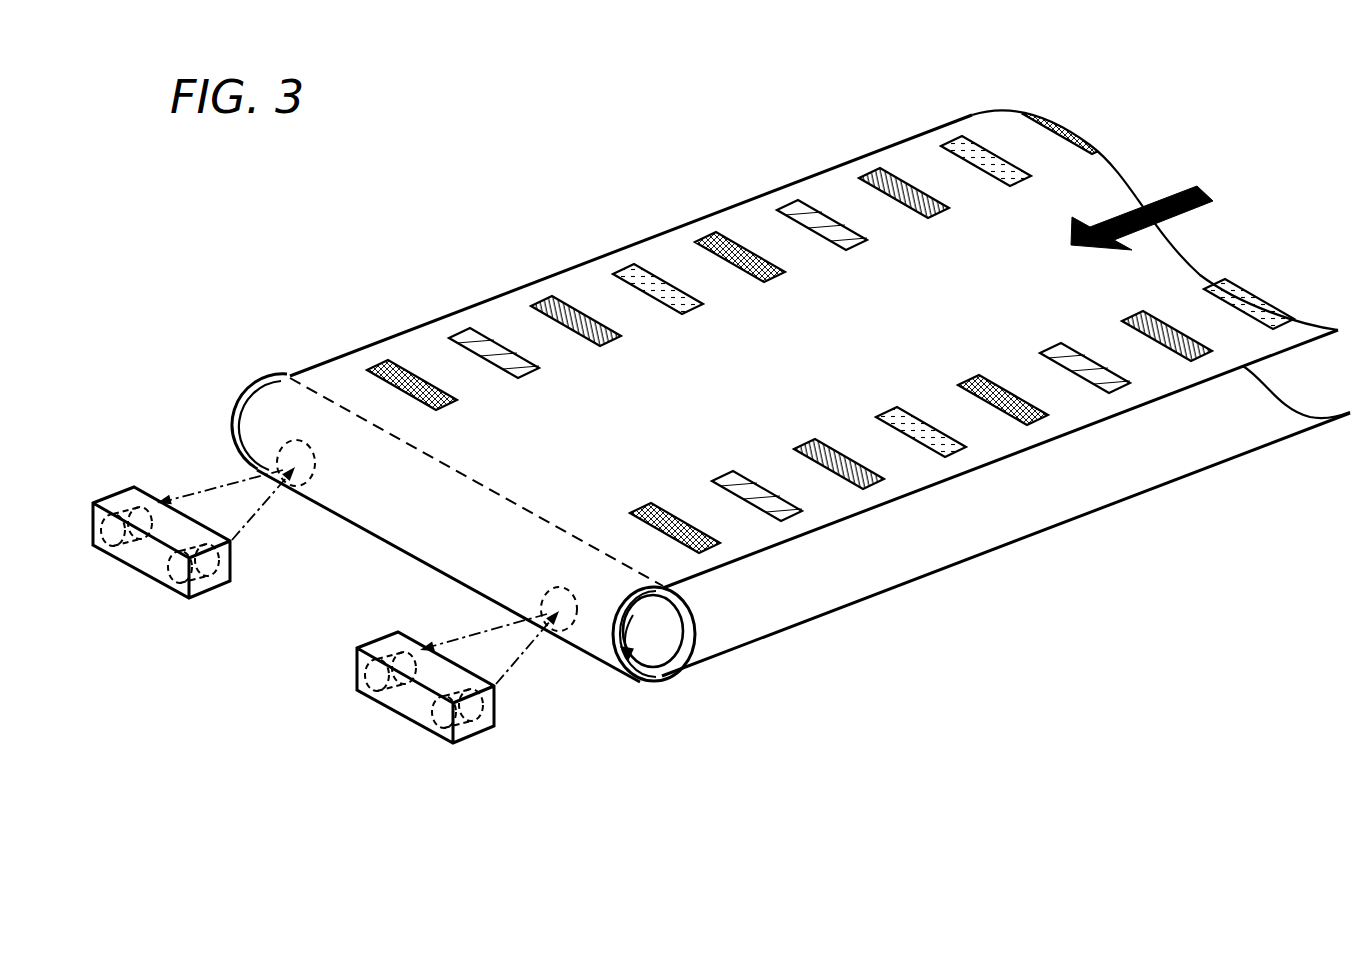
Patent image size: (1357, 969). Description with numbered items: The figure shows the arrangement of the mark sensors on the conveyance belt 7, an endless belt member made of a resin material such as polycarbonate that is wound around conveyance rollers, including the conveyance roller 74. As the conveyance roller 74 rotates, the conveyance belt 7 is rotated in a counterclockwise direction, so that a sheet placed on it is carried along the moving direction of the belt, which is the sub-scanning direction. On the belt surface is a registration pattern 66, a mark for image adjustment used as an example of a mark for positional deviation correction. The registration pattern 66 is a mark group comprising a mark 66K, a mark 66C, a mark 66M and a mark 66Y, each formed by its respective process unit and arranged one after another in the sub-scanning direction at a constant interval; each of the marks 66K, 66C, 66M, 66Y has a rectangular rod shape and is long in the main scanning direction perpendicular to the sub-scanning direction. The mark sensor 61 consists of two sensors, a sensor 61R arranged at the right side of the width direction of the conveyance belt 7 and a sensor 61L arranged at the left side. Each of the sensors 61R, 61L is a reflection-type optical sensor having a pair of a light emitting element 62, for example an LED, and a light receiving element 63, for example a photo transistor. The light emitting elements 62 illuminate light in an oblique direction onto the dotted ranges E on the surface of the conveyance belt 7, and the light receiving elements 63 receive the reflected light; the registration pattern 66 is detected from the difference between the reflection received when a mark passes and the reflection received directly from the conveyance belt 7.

The conveyance belt 7 is at (542, 288).
The mark for image adjustment 66 is at (821, 386).
The mark 66K is at (391, 358).
The mark 66C is at (802, 508).
The mark 66M is at (882, 475).
The mark 66Y is at (953, 366).
The conveyance roller 74 is at (650, 666).
The mark sensor 61 is at (315, 624).
The sensor 61R is at (212, 594).
The sensor 61L is at (357, 656).
The light emitting element 62 is at (266, 716).
The light receiving element 63 is at (99, 552).
The dotted range E is at (277, 455).